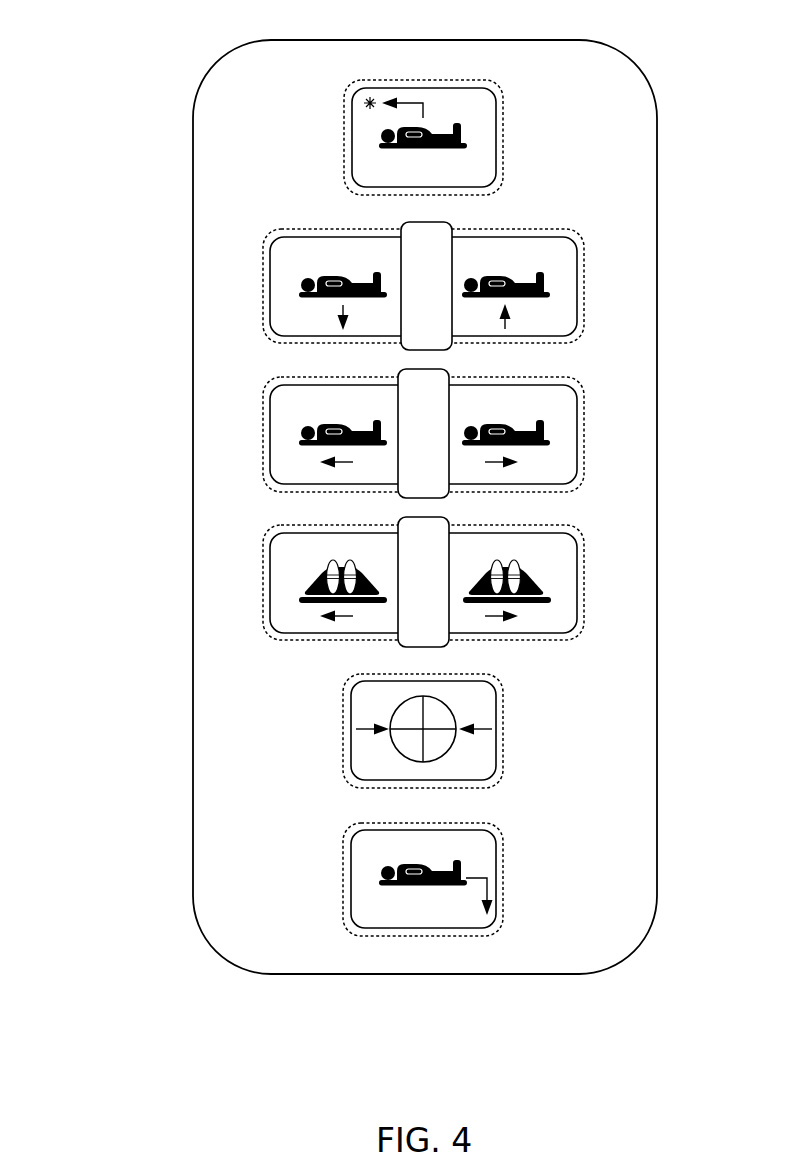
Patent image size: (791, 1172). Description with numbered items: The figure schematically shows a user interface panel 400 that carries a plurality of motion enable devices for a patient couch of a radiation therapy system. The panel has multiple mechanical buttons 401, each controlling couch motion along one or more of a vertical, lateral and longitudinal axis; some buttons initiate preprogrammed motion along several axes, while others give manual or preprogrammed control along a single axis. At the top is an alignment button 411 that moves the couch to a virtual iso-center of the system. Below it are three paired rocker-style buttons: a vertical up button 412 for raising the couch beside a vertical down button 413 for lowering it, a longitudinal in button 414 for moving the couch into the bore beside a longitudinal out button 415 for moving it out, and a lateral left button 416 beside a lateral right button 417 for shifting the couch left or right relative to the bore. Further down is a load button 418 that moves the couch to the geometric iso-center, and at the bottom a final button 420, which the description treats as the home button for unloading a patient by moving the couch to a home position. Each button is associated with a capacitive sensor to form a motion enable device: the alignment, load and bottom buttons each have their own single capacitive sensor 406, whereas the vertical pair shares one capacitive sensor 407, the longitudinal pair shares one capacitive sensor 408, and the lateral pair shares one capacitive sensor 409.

The user interface panel 400 is at (139, 38).
The mechanical buttons 401 is at (262, 158).
The capacitive sensor 406 is at (344, 147).
The capacitive sensor 407 is at (584, 303).
The capacitive sensor 408 is at (584, 460).
The capacitive sensor 409 is at (584, 600).
The alignment button 411 is at (496, 134).
The vertical up button 412 is at (528, 237).
The vertical down button 413 is at (312, 237).
The longitudinal in button 414 is at (290, 385).
The longitudinal out button 415 is at (538, 385).
The lateral left button 416 is at (290, 533).
The lateral right button 417 is at (542, 533).
The load button 418 is at (351, 720).
The patient unload position button 420 is at (351, 875).